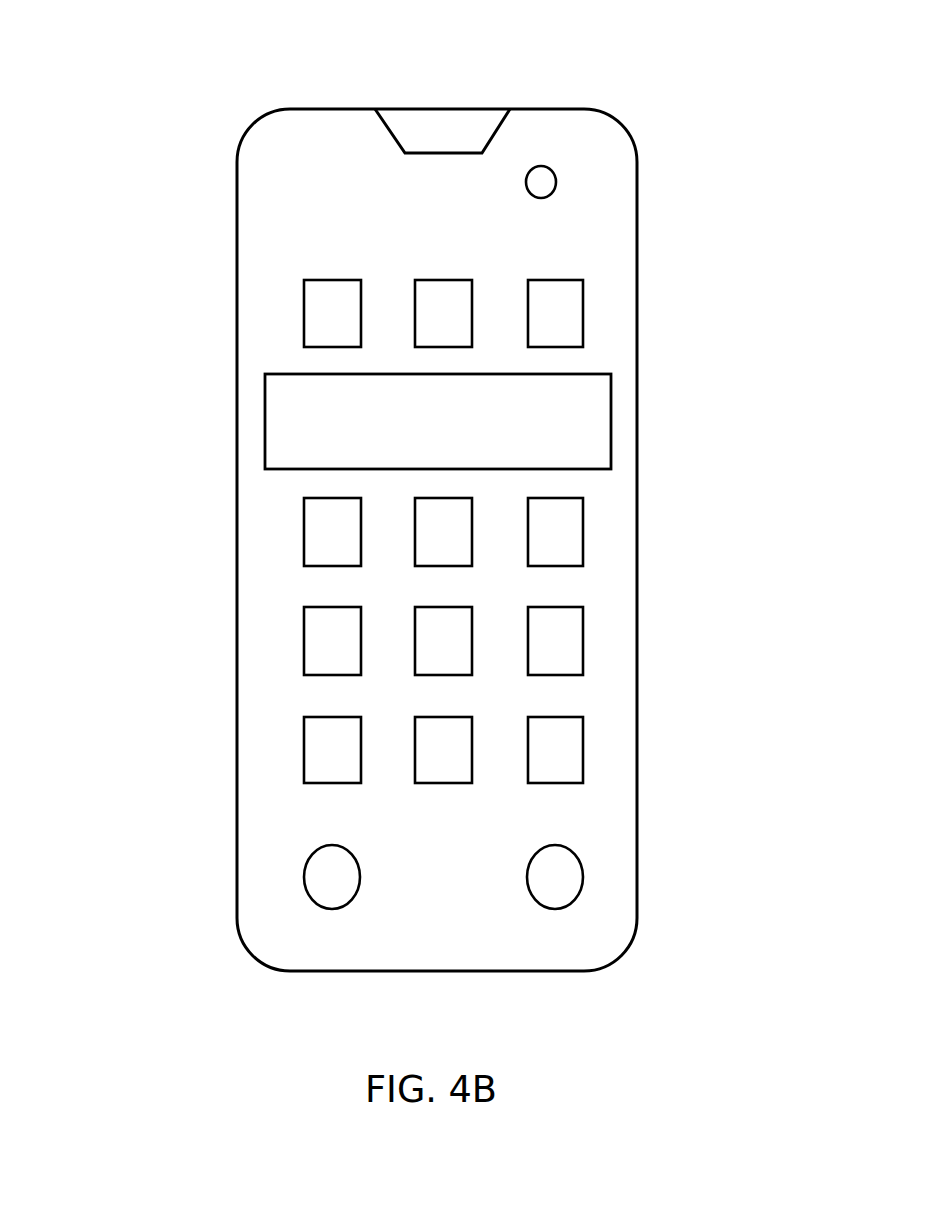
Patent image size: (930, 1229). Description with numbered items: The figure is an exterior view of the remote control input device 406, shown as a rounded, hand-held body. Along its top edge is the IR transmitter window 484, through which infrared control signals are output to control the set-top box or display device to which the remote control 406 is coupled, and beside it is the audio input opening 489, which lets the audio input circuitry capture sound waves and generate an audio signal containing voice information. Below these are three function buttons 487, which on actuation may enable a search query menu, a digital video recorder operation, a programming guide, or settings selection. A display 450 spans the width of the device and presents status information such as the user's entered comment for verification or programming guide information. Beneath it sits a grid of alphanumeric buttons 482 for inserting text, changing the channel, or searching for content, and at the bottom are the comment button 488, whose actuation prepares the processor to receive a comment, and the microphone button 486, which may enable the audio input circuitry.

The remote control input device 406 is at (638, 402).
The IR transmitter window 484 is at (417, 110).
The audio input opening 489 is at (556, 178).
The function buttons 487 is at (555, 280).
The display 450 is at (438, 421).
The alphanumeric buttons 482 is at (277, 779).
The comment button 488 is at (323, 847).
The microphone button 486 is at (578, 858).